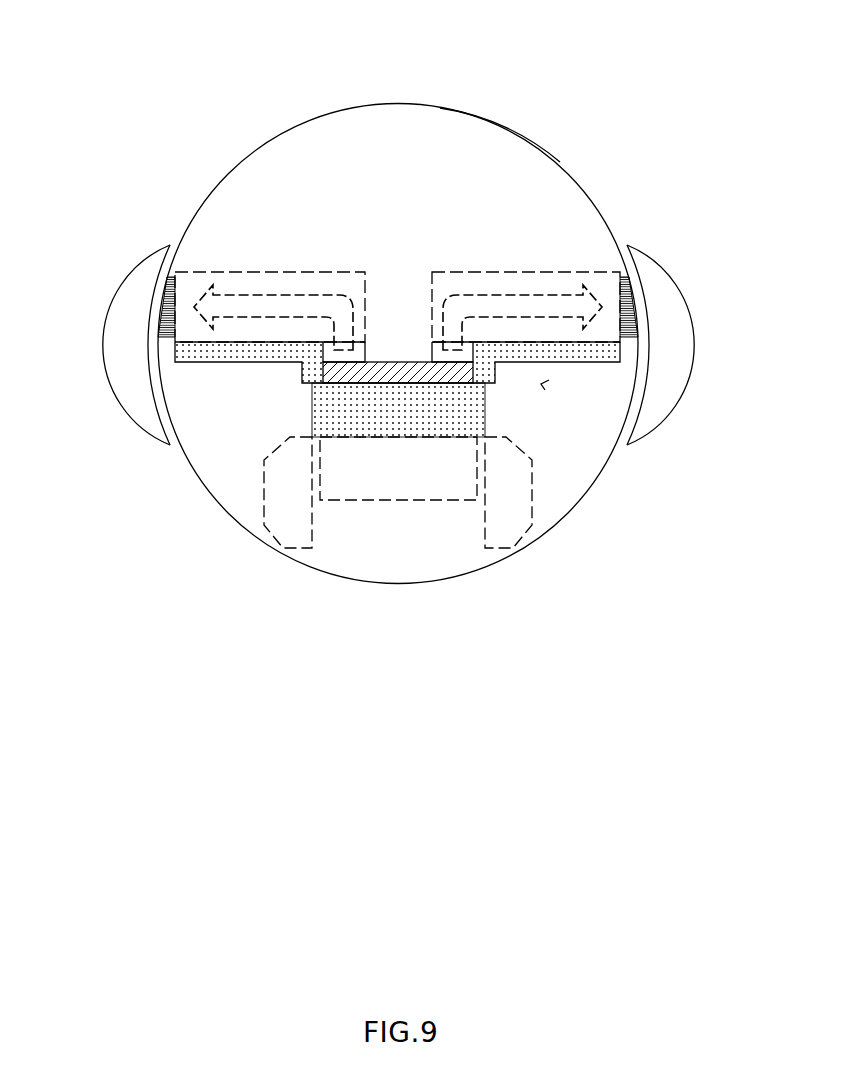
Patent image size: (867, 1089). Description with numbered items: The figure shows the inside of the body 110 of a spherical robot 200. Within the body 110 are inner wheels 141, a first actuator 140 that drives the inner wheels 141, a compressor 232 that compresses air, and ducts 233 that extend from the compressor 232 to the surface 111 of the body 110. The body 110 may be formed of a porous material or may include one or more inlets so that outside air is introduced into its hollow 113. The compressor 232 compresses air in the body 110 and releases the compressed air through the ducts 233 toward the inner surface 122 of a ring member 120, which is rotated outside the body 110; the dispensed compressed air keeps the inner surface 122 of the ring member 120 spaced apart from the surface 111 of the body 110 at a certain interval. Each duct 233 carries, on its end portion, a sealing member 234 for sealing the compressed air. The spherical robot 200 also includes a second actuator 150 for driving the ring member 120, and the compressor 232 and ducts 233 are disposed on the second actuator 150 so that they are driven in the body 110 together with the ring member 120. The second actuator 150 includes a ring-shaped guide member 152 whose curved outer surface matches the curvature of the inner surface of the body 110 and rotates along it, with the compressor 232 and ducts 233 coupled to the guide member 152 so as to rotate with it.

The spherical robot 200 is at (135, 53).
The body 110 is at (483, 110).
The surface of the body 111 is at (512, 130).
The hollow 113 is at (545, 390).
The ring member 120 is at (130, 255).
The inner surface of the ring member 122 is at (167, 272).
The sealing member 234 is at (168, 320).
The guide member 152 is at (210, 354).
The compressor 232 is at (400, 372).
The ducts 233 is at (270, 270).
The second actuator 150 is at (460, 410).
The first actuator 140 is at (398, 487).
The inner wheels 141 is at (288, 527).